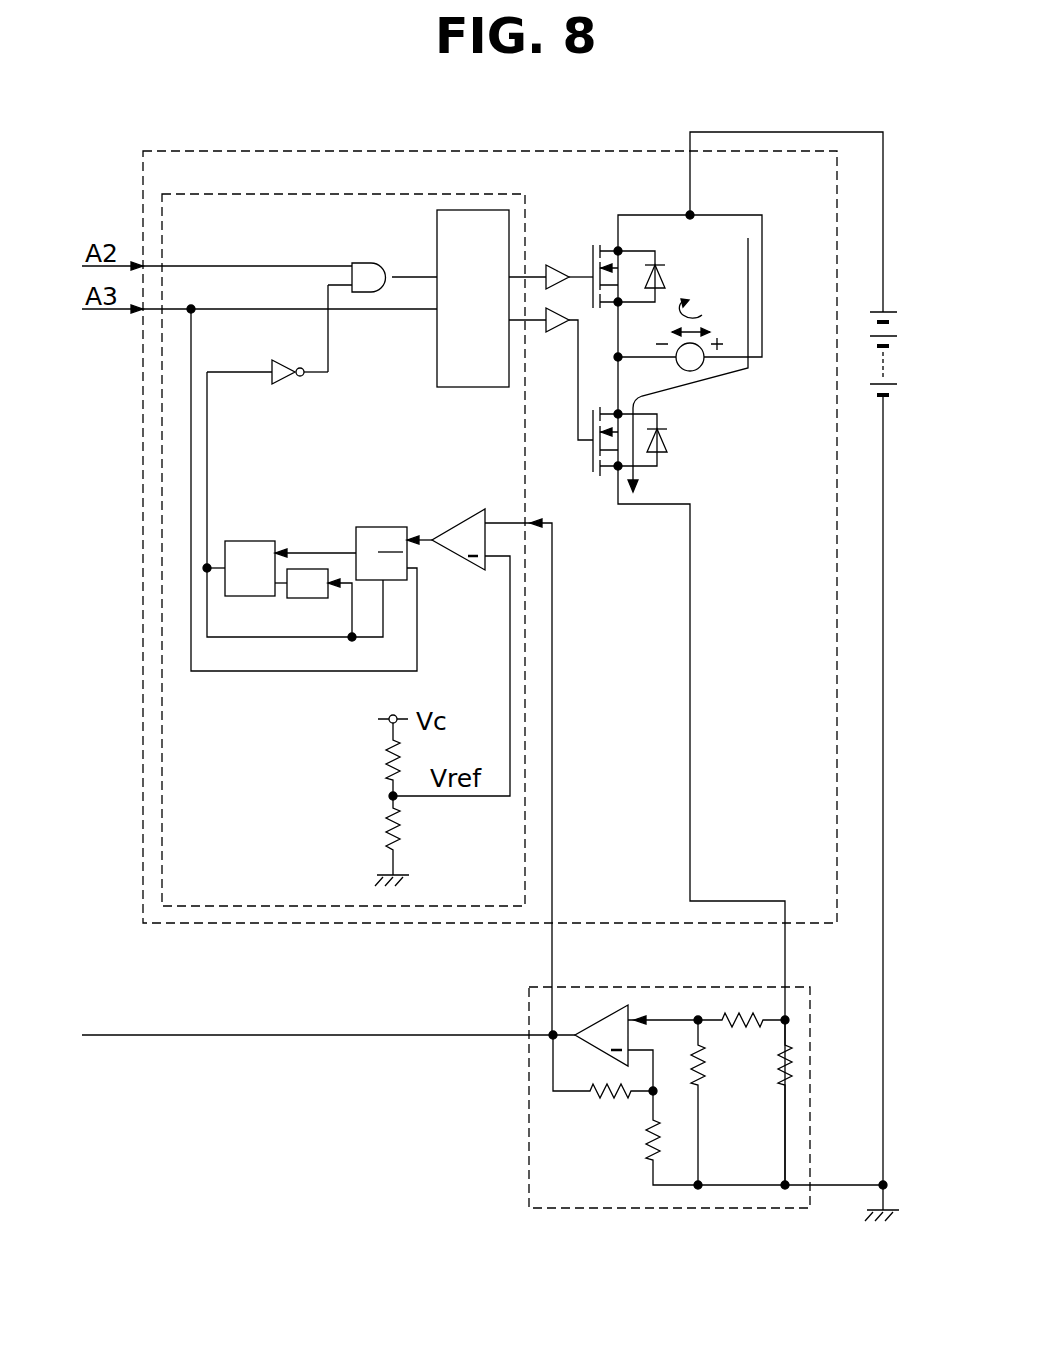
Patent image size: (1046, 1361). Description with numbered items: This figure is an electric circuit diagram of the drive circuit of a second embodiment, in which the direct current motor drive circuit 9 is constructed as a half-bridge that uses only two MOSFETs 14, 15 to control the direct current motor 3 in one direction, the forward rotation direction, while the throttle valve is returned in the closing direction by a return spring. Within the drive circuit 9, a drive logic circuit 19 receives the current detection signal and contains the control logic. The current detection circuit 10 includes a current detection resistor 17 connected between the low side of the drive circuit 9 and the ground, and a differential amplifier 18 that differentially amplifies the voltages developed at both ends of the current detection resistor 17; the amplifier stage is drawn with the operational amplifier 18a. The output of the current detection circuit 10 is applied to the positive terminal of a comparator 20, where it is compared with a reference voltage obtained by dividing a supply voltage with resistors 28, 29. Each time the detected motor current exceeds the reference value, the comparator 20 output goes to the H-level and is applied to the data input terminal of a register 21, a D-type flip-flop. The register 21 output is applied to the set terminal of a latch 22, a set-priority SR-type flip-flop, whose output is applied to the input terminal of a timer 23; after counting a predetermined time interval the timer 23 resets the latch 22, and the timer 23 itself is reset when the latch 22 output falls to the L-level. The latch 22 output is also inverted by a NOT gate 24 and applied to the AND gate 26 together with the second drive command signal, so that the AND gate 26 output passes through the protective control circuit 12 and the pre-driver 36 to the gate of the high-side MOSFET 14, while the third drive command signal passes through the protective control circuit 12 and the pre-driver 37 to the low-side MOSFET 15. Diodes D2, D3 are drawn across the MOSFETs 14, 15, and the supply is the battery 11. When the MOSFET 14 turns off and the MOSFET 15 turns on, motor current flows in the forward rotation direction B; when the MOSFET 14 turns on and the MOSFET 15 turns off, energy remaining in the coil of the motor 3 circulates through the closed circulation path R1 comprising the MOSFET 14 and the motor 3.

The direct current motor drive circuit 9 is at (355, 150).
The drive logic circuit 19 is at (265, 194).
The current detection circuit 10 is at (812, 1148).
The protective control circuit 12 is at (477, 210).
The AND gate 26 is at (386, 268).
The NOT gate 24 is at (286, 380).
The pre-driver 36 is at (572, 264).
The pre-driver 37 is at (574, 304).
The MOSFET 14 is at (600, 245).
The MOSFET 15 is at (602, 410).
The diode D2 is at (663, 262).
The diode D3 is at (660, 454).
The direct current motor 3 is at (703, 366).
The closed circulation path R1 is at (704, 310).
The motor forward rotation direction B is at (670, 392).
The battery 11 is at (883, 314).
The latch 22 is at (256, 529).
The register 21 is at (389, 515).
The timer 23 is at (315, 598).
The comparator 20 is at (470, 566).
The resistor 28 is at (385, 757).
The resistor 29 is at (385, 810).
The operational amplifier 18a is at (553, 953).
The differential amplifier 18 is at (600, 1112).
The current detection resistor 17 is at (796, 1066).